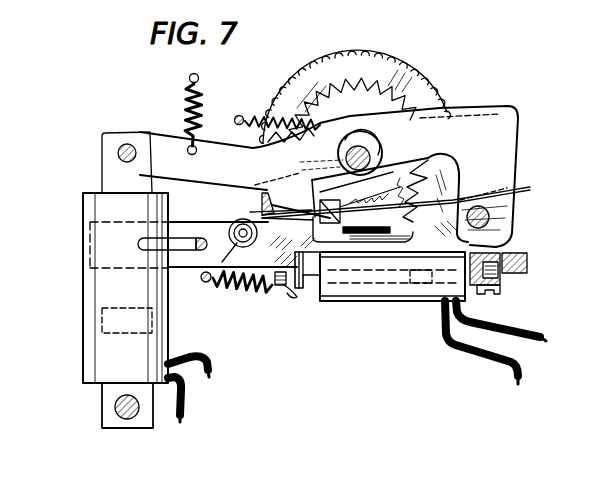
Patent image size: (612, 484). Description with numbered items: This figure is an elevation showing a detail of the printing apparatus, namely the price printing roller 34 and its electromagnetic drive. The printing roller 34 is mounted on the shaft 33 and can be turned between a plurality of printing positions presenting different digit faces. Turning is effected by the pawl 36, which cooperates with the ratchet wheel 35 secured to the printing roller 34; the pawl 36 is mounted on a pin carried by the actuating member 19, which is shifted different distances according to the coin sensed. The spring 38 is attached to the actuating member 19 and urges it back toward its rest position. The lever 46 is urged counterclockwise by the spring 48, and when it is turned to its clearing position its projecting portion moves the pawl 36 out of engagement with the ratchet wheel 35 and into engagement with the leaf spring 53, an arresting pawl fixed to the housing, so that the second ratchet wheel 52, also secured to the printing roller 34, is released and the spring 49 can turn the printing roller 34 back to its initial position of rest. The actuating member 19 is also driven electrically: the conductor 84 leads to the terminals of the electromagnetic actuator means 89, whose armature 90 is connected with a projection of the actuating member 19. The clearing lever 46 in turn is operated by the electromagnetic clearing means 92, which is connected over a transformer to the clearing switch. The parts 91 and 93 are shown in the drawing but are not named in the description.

The actuating member 19 is at (187, 258).
The shaft 33 is at (382, 150).
The printing roller 34 is at (290, 92).
The ratchet wheel 35 is at (350, 92).
The pawl 36 is at (258, 207).
The spring 38 is at (238, 290).
The lever 46 is at (498, 117).
The spring 48 is at (182, 97).
The spring 49 is at (246, 118).
The second ratchet wheel 52 is at (415, 86).
The leaf spring 53 is at (521, 192).
The conductor 84 is at (478, 348).
The electromagnetic actuator means 89 is at (396, 290).
The armature 90 is at (316, 286).
The clip 91 is at (290, 300).
The electromagnetic clearing means 92 is at (100, 366).
The mounting block 93 is at (110, 180).